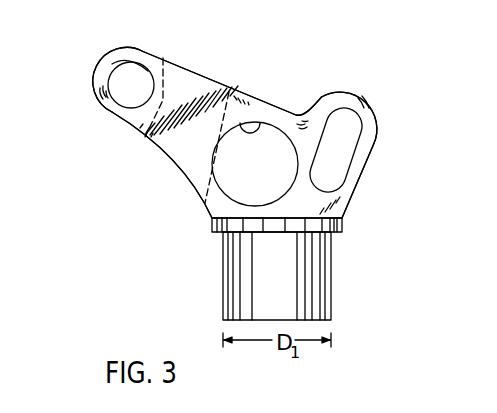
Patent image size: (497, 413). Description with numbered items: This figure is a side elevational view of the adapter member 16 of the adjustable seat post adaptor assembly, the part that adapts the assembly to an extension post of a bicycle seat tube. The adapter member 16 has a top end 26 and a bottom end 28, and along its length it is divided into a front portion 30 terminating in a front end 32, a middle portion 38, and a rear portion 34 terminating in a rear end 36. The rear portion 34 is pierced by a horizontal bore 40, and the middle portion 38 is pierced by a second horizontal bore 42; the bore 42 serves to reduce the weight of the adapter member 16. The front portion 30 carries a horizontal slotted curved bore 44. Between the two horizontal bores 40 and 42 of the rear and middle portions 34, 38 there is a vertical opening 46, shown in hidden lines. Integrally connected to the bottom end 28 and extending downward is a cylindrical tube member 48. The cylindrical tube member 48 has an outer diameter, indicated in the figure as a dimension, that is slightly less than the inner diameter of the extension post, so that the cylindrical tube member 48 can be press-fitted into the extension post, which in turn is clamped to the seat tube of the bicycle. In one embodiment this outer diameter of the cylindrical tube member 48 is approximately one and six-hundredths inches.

The adapter member 16 is at (272, 42).
The top end 26 is at (291, 112).
The bottom end 28 is at (214, 236).
The front portion 30 is at (347, 94).
The front end 32 is at (376, 137).
The rear portion 34 is at (141, 126).
The rear end 36 is at (95, 80).
The middle portion 38 is at (241, 96).
The horizontal bore 40 is at (146, 69).
The horizontal bore 42 is at (256, 131).
The horizontal slotted curved bore 44 is at (341, 163).
The vertical opening 46 is at (203, 167).
The cylindrical tube member 48 is at (318, 276).